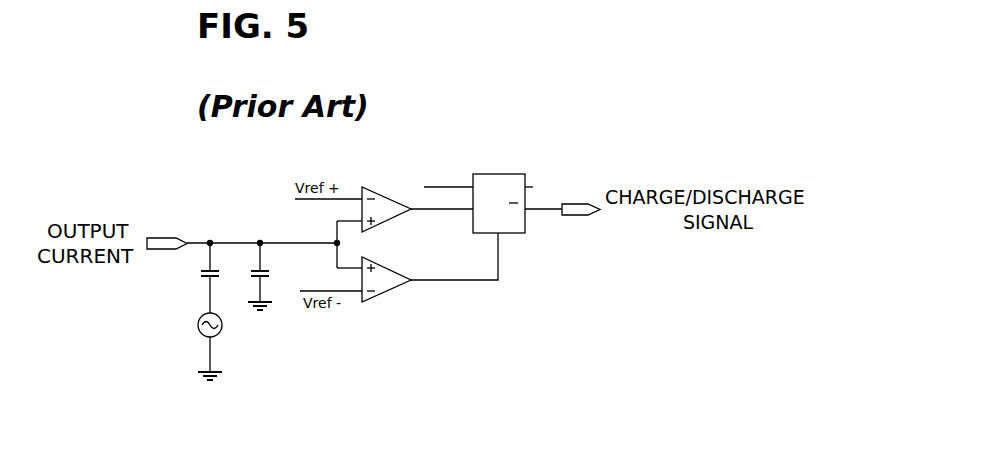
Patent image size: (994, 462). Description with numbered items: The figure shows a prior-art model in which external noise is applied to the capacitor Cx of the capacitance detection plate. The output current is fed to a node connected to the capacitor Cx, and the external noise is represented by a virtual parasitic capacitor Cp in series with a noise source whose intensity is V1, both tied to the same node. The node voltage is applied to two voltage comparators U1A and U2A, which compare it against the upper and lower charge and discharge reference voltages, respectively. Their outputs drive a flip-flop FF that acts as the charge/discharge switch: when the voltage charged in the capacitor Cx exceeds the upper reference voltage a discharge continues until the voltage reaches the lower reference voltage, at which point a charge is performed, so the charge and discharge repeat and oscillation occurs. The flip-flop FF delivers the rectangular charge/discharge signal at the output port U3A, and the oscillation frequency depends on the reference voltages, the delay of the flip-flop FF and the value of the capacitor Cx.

The virtual parasitic capacitor Cp is at (197, 278).
The capacitor Cx is at (274, 282).
The intensity of noise V1 is at (241, 351).
The voltage comparator U1A is at (417, 204).
The voltage comparator U2A is at (430, 267).
The flip-flop FF is at (478, 195).
The output port U3A is at (562, 189).